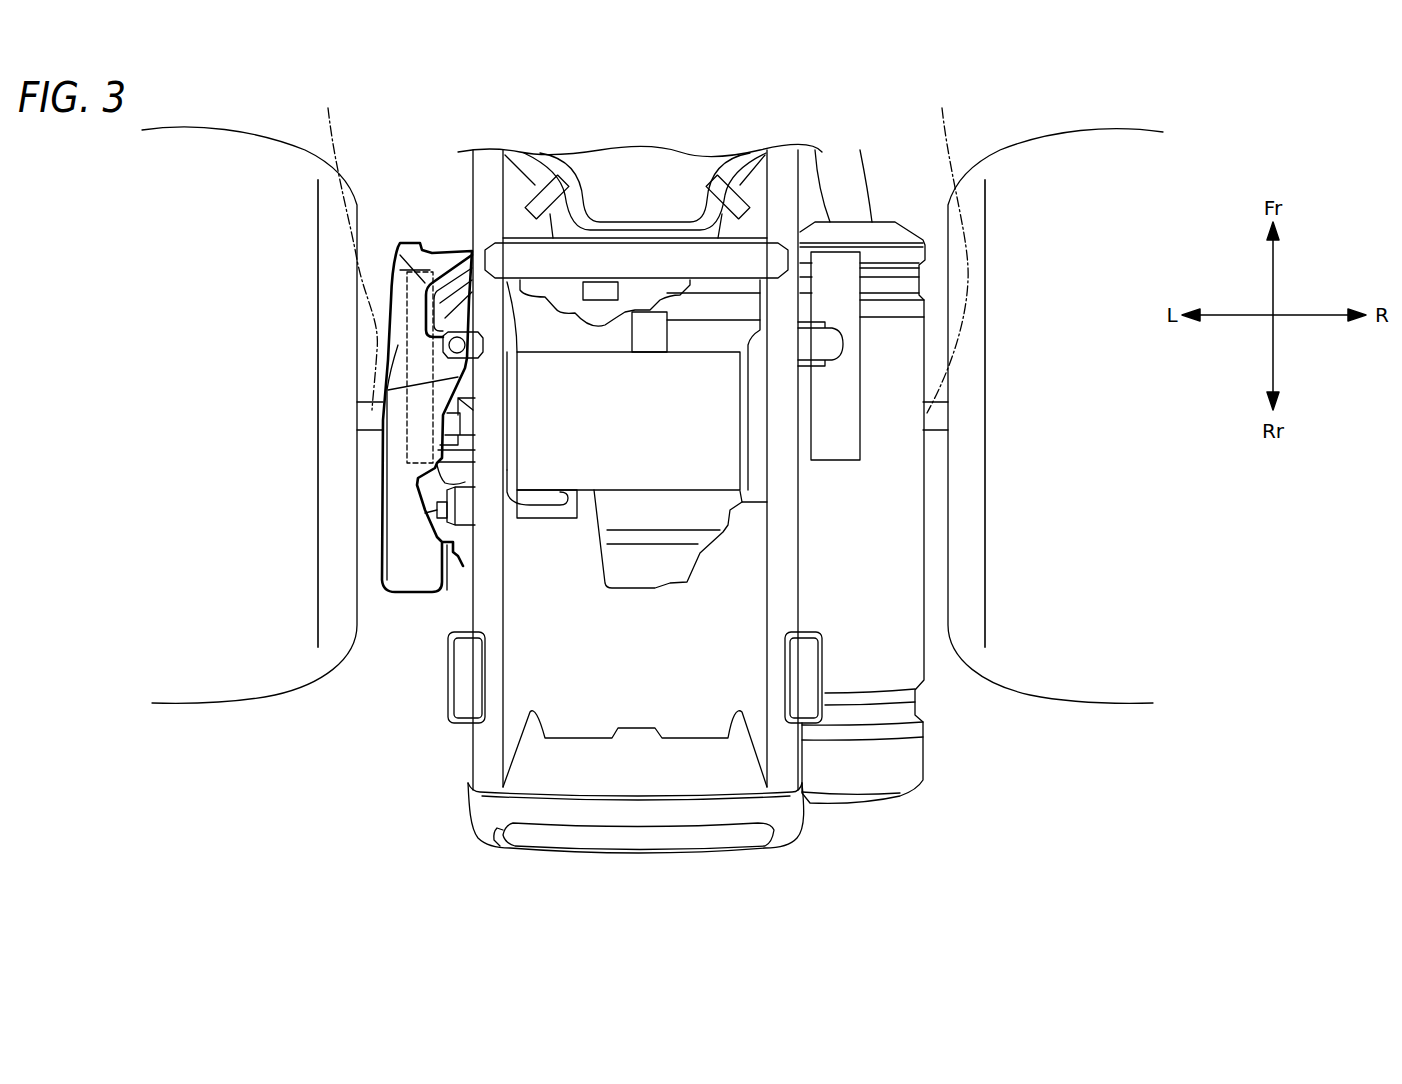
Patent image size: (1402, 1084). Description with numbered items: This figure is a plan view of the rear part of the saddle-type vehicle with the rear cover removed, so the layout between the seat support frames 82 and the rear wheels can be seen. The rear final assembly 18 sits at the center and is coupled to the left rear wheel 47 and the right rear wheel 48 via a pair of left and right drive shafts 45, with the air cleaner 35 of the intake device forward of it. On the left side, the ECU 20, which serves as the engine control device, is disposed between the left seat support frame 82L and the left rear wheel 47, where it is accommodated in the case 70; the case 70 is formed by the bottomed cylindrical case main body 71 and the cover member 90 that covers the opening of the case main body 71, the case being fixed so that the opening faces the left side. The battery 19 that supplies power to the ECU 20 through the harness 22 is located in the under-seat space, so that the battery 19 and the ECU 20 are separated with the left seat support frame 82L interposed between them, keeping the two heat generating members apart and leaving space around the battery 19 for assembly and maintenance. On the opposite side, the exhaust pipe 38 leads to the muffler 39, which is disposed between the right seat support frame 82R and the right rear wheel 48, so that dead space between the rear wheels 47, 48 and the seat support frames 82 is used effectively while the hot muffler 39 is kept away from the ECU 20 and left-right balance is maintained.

The rear final assembly 18 is at (586, 563).
The battery 19 is at (680, 480).
The ECU 20 is at (433, 463).
The harness 22 is at (543, 505).
The air cleaner 35 is at (655, 160).
The exhaust pipe 38 is at (843, 165).
The muffler 39 is at (900, 657).
The drive shaft 45 is at (642, 238).
The left rear wheel 47 is at (222, 680).
The right rear wheel 48 is at (1083, 673).
The case 70 is at (412, 606).
The case main body 71 is at (472, 547).
The seat support frames 82 is at (383, 888).
The left seat support frame 82L is at (478, 757).
The right seat support frame 82R is at (790, 757).
The cover member 90 is at (395, 565).